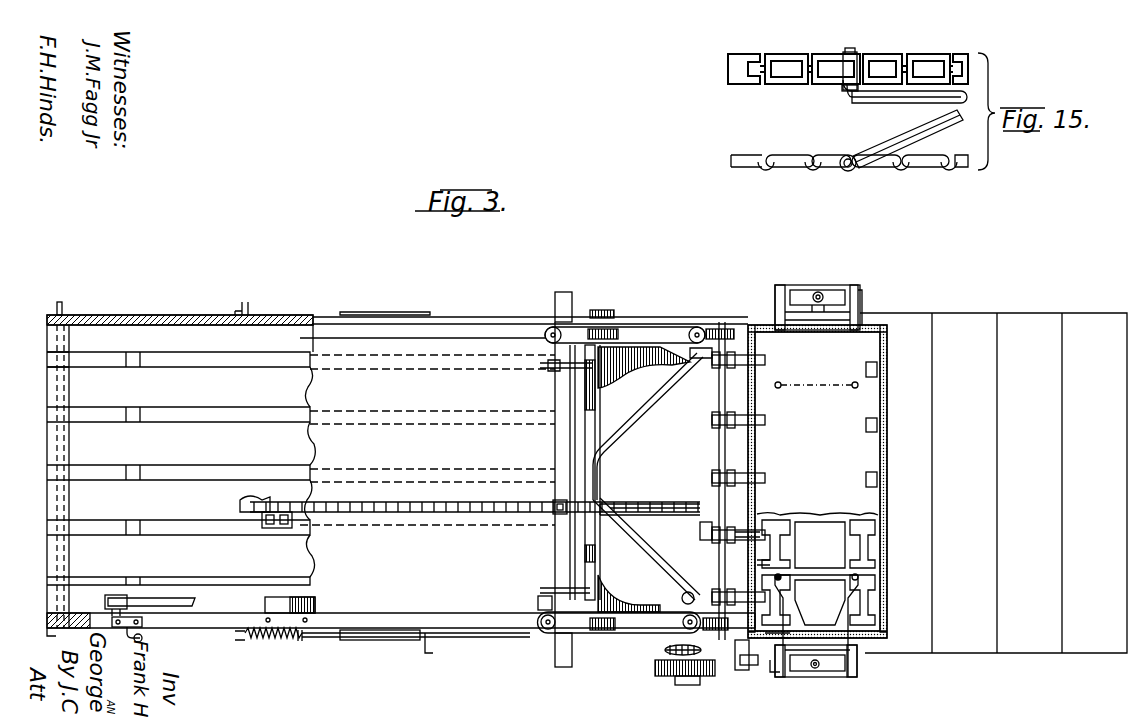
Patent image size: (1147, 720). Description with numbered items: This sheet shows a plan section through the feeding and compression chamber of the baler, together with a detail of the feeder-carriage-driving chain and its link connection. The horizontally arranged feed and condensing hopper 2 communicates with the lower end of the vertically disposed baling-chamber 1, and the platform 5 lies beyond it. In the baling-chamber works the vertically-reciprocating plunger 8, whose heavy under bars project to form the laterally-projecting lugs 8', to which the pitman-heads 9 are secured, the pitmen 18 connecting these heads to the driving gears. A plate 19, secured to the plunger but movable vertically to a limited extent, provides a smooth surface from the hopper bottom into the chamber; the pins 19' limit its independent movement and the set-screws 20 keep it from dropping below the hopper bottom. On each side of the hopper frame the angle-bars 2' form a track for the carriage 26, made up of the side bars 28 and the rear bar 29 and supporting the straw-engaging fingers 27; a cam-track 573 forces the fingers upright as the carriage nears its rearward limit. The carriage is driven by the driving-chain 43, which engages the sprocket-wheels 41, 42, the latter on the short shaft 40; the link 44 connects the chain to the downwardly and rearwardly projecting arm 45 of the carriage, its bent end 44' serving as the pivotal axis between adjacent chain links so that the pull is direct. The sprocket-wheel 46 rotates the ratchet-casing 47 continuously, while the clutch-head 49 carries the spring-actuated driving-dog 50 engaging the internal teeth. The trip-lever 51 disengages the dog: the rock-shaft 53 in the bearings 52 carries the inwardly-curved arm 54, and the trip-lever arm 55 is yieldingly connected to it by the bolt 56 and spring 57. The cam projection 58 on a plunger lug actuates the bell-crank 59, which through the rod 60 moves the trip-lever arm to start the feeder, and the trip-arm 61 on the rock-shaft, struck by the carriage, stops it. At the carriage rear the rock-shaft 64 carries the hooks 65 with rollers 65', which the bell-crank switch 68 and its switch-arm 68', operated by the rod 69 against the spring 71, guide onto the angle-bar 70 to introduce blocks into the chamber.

In FIG. 3, the baling-chamber 1 is at (817, 481).
In FIG. 3, the feed and condensing hopper 2 is at (301, 455).
In FIG. 3, the angle-bars 2' is at (401, 469).
In FIG. 3, the platform 5 is at (993, 483).
In FIG. 3, the plunger 8 is at (817, 569).
In FIG. 3, the laterally-projecting lugs 8' is at (827, 484).
In FIG. 3, the pitman-head 9 is at (846, 290).
In FIG. 3, the pitmen 18 is at (820, 290).
In FIG. 3, the plate 19 is at (887, 424).
In FIG. 3, the pins 19' is at (816, 484).
In FIG. 3, the set-screws 20 is at (885, 630).
In FIG. 3, the carriage 26 is at (626, 432).
In FIG. 3, the straw-engaging fingers 27 is at (728, 412).
In FIG. 3, the side bars 28 is at (655, 334).
In FIG. 3, the rear bar 29 is at (556, 442).
In FIG. 3, the short shaft 40 is at (275, 500).
In FIG. 3, the sprocket-wheel 41 is at (682, 503).
In FIG. 3, the sprocket-wheel 42 is at (290, 508).
In FIG. 3, the driving-chain 43 is at (405, 507).
In FIG. 3, the link 44 is at (650, 494).
In FIG. 15, the link 44 is at (903, 125).
In FIG. 15, the bent end 44' is at (863, 65).
In FIG. 3, the arm 45 is at (552, 505).
In FIG. 15, the arm 45 is at (786, 156).
In FIG. 3, the sprocket-wheel 46 is at (664, 650).
In FIG. 3, the ratchet-casing 47 is at (660, 668).
In FIG. 3, the clutch-head 49 is at (680, 680).
In FIG. 3, the driving-dog 50 is at (690, 684).
In FIG. 3, the trip-lever 51 is at (718, 450).
In FIG. 3, the bearings 52 is at (612, 328).
In FIG. 3, the rock-shaft 53 is at (630, 572).
In FIG. 3, the inwardly-curved arm 54 is at (712, 540).
In FIG. 3, the trip-lever arm 55 is at (551, 327).
In FIG. 3, the bolt 56 is at (706, 360).
In FIG. 3, the spring 57 is at (742, 660).
In FIG. 3, the cam-track 573 is at (310, 604).
In FIG. 3, the cam projection 58 is at (768, 672).
In FIG. 3, the bell-crank 59 is at (783, 630).
In FIG. 3, the rod 60 is at (740, 672).
In FIG. 3, the trip-arm 61 is at (750, 562).
In FIG. 3, the rock-shaft 64 is at (574, 553).
In FIG. 3, the hooks 65 is at (551, 476).
In FIG. 3, the roller 65' is at (524, 602).
In FIG. 3, the bell-crank switch 68 is at (141, 638).
In FIG. 3, the switch-arm 68' is at (116, 589).
In FIG. 3, the rod 69 is at (355, 641).
In FIG. 3, the angle-bar 70 is at (188, 598).
In FIG. 3, the spring 71 is at (280, 641).